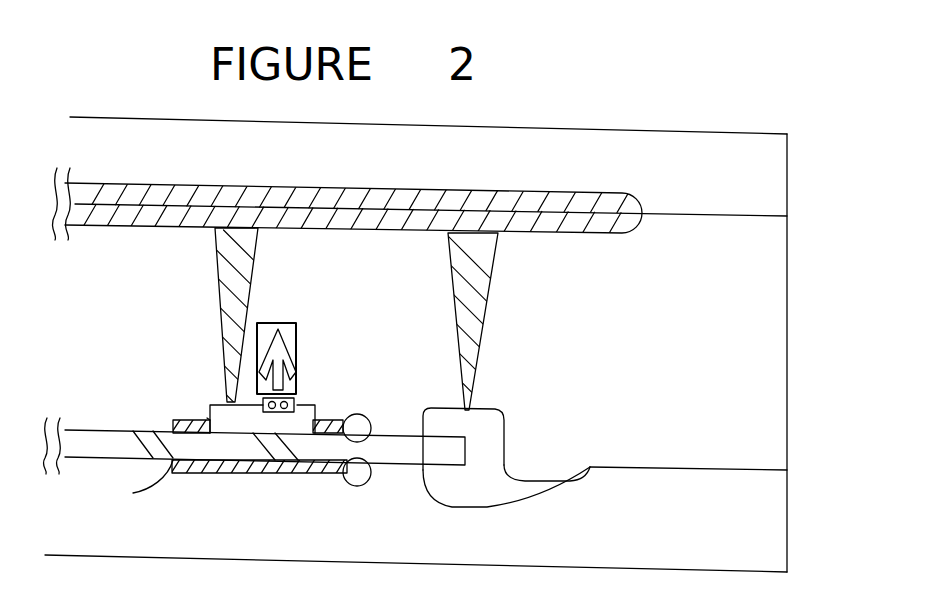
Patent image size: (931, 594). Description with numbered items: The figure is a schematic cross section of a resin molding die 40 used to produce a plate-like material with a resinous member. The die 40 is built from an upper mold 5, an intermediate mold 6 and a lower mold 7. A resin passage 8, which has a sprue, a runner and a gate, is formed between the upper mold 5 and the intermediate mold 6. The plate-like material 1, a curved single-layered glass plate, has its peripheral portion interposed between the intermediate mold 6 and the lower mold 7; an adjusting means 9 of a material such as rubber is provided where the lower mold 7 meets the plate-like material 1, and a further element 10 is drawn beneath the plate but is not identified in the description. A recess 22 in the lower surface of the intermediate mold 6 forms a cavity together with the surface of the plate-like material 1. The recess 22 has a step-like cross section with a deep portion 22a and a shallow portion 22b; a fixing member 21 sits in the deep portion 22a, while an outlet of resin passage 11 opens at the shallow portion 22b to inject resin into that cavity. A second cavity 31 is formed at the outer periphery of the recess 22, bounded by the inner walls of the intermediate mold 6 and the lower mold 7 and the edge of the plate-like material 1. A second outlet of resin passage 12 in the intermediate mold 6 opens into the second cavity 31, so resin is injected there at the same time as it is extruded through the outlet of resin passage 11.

The plate-like material 1 is at (92, 448).
The upper mold 5 is at (755, 183).
The intermediate mold 6 is at (755, 277).
The lower mold 7 is at (752, 512).
The resin passage 8 is at (233, 252).
The adjusting means 9 is at (180, 420).
The lower conductive layer 10 is at (245, 475).
The outlet of resin passage 11 is at (228, 403).
The second outlet of resin passage 12 is at (467, 409).
The fixing member 21 is at (295, 326).
The recess 22 is at (281, 419).
The deep portion 22a is at (295, 375).
The shallow portion 22b is at (207, 418).
The second cavity 31 is at (482, 456).
The resin molding die 40 is at (796, 350).